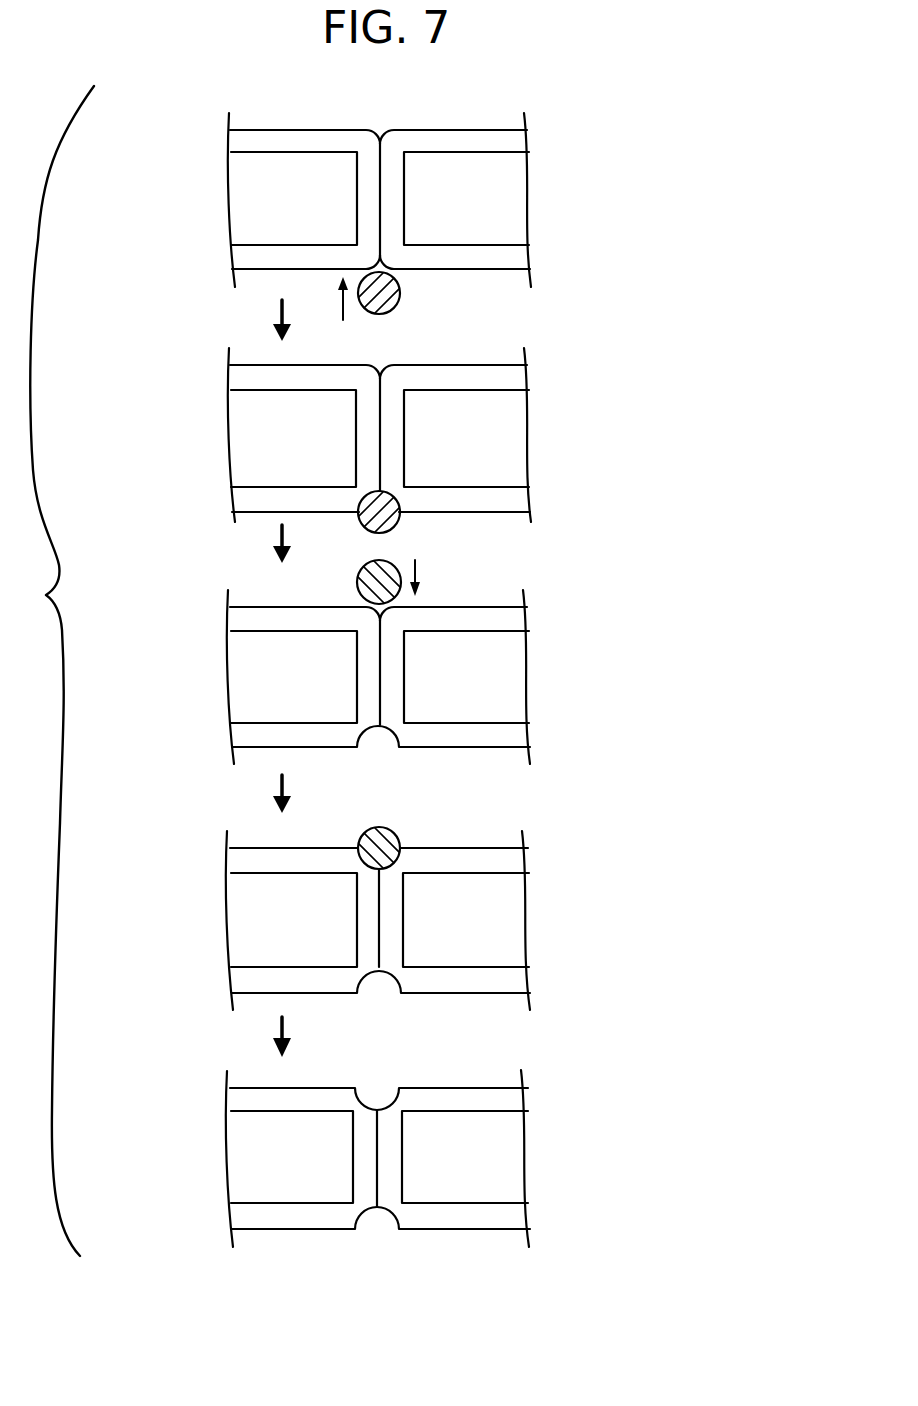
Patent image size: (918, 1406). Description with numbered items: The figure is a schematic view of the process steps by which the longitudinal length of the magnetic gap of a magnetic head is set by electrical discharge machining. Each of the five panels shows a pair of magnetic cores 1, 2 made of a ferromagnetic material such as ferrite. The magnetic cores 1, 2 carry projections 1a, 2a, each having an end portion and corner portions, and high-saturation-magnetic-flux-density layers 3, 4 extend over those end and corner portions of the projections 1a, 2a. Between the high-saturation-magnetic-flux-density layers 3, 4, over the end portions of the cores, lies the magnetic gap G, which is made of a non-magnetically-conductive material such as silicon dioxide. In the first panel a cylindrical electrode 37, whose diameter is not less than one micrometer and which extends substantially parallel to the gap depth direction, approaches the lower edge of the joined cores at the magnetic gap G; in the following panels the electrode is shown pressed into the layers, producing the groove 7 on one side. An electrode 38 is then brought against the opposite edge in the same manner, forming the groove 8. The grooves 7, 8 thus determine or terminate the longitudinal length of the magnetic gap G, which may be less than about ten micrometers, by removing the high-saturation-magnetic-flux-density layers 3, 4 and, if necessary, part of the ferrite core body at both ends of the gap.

The magnetic core 1 is at (220, 235).
The projection 1a is at (270, 190).
The high-saturation-magnetic-flux-density layer 3 is at (250, 138).
The magnetic core 2 is at (542, 170).
The projection 2a is at (493, 213).
The high-saturation-magnetic-flux-density layer 4 is at (512, 143).
The magnetic gap G is at (382, 228).
The cylindrical electrode 37 is at (401, 292).
The second friction stir welding tool / probe 38 is at (357, 577).
The groove 7 is at (403, 740).
The groove 8 is at (402, 1100).